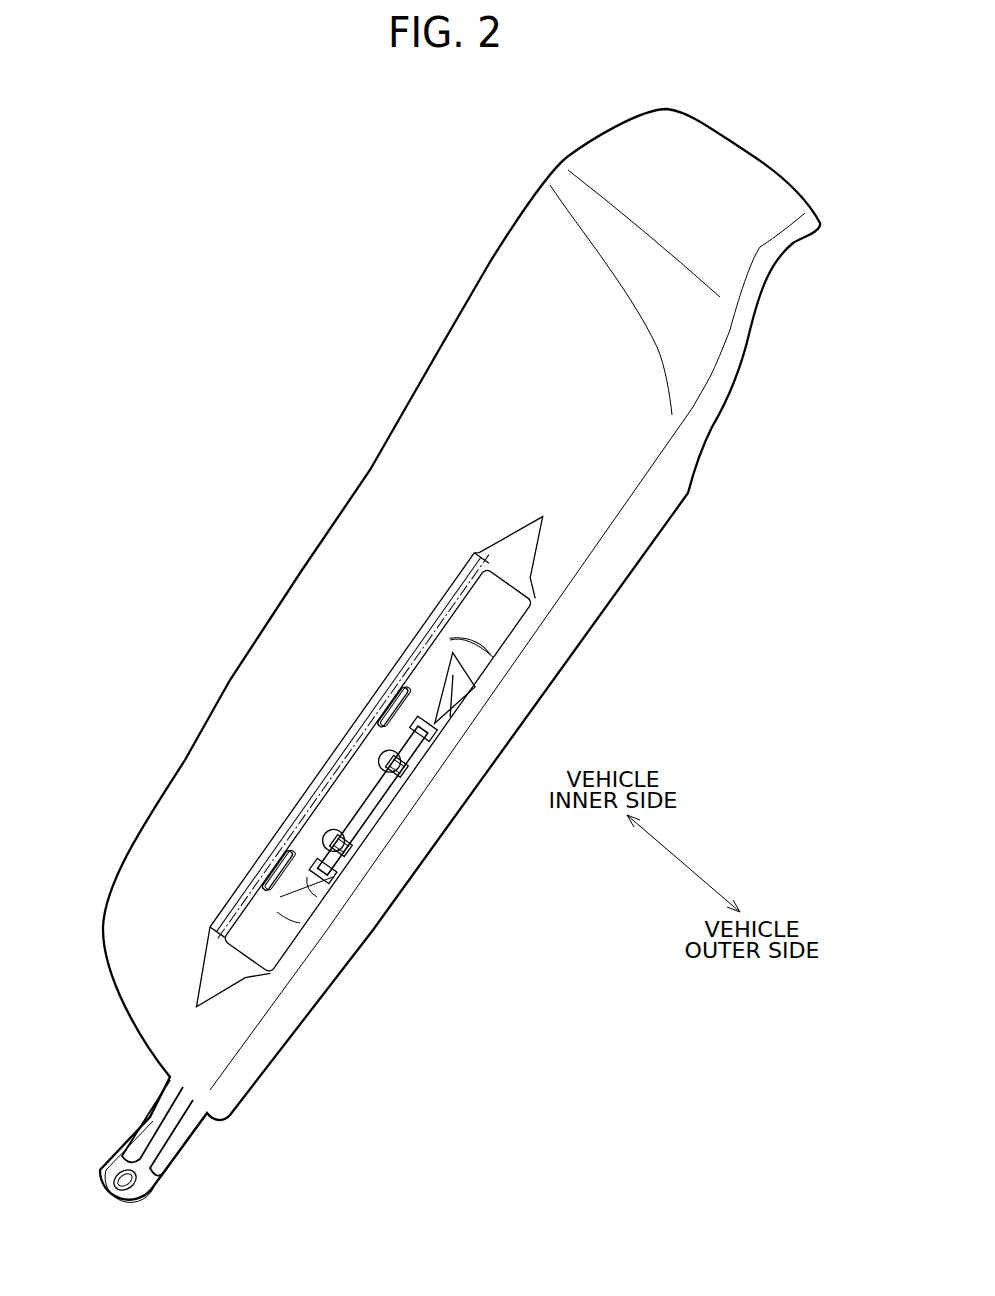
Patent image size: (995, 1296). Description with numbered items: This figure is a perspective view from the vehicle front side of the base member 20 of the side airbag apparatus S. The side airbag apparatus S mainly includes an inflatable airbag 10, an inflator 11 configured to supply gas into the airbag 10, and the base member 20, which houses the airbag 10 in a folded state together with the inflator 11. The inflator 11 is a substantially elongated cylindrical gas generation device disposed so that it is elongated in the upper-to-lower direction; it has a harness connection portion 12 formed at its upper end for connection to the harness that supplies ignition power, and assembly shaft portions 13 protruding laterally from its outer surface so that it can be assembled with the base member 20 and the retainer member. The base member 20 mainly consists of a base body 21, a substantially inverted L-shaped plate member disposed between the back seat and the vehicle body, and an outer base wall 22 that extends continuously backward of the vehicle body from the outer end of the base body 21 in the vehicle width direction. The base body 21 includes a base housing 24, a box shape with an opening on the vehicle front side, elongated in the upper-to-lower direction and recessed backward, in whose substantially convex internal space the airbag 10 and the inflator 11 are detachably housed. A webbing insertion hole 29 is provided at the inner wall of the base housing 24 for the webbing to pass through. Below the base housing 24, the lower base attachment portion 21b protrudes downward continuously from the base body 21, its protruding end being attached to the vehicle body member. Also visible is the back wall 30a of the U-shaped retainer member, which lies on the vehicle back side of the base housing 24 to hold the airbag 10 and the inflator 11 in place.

The side airbag apparatus S is at (188, 173).
The base member 20 is at (478, 365).
The base body 21 is at (448, 398).
The outer base wall 22 is at (643, 520).
The lower base attachment portion 21b is at (128, 1154).
The back wall 30a is at (185, 1157).
The airbag 10 is at (408, 637).
The inflator 11 is at (362, 791).
The harness connection portion 12 is at (415, 727).
The assembly shaft portions 13 is at (377, 767).
The webbing insertion hole 29 is at (390, 687).
The base housing 24 is at (318, 882).